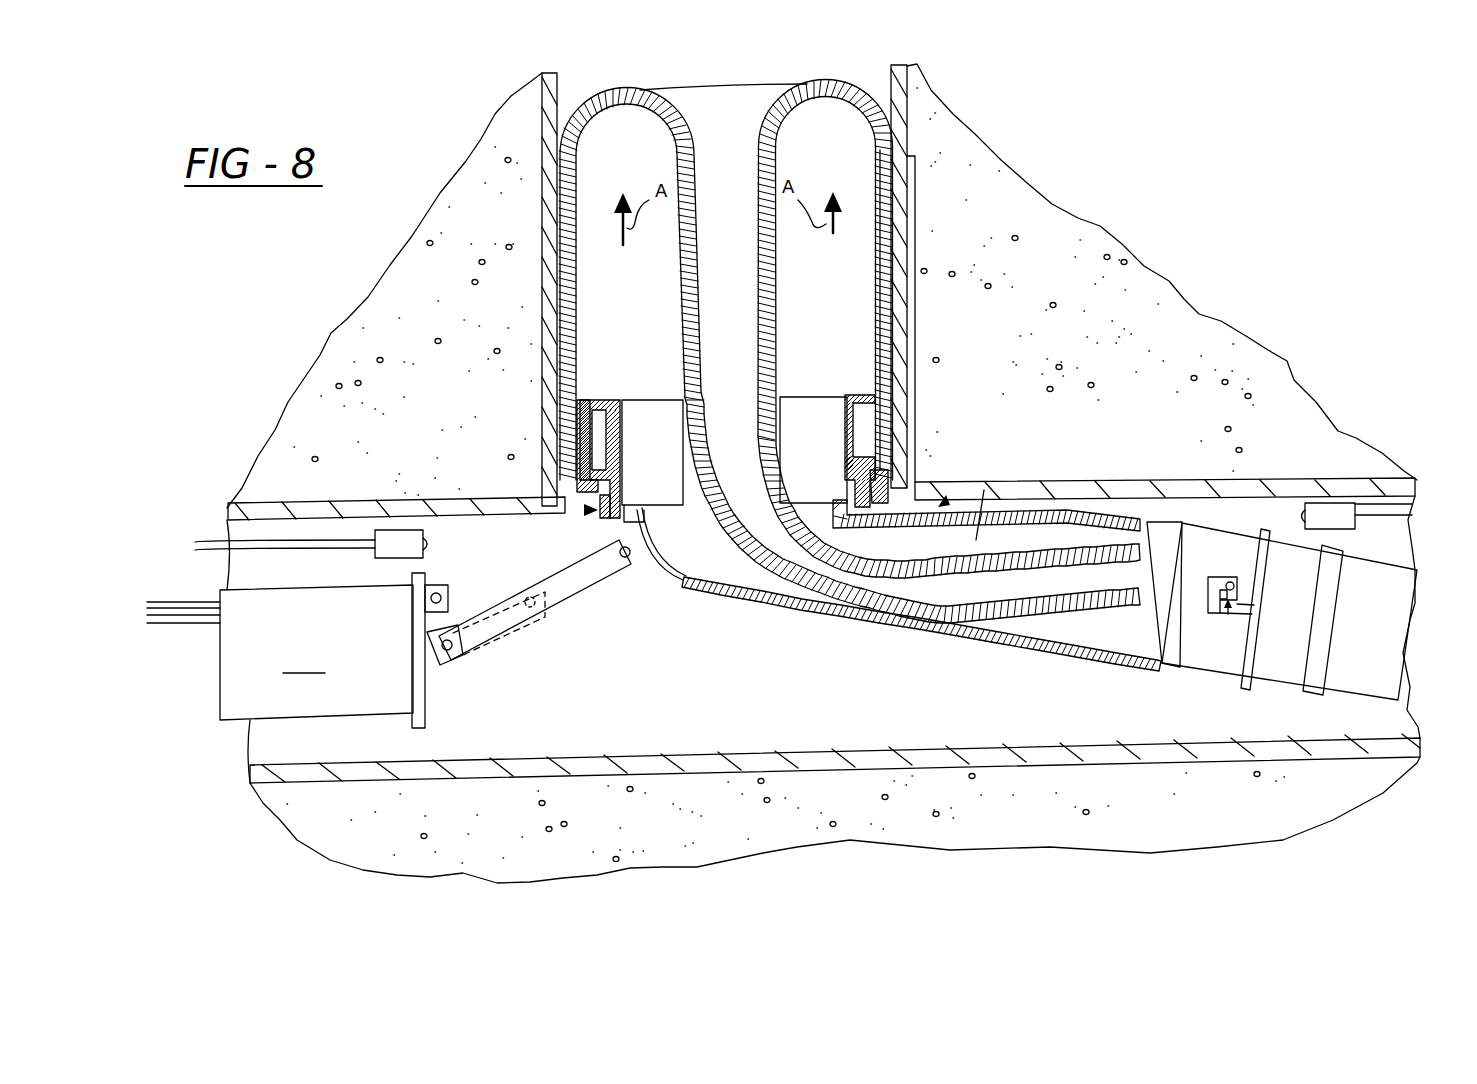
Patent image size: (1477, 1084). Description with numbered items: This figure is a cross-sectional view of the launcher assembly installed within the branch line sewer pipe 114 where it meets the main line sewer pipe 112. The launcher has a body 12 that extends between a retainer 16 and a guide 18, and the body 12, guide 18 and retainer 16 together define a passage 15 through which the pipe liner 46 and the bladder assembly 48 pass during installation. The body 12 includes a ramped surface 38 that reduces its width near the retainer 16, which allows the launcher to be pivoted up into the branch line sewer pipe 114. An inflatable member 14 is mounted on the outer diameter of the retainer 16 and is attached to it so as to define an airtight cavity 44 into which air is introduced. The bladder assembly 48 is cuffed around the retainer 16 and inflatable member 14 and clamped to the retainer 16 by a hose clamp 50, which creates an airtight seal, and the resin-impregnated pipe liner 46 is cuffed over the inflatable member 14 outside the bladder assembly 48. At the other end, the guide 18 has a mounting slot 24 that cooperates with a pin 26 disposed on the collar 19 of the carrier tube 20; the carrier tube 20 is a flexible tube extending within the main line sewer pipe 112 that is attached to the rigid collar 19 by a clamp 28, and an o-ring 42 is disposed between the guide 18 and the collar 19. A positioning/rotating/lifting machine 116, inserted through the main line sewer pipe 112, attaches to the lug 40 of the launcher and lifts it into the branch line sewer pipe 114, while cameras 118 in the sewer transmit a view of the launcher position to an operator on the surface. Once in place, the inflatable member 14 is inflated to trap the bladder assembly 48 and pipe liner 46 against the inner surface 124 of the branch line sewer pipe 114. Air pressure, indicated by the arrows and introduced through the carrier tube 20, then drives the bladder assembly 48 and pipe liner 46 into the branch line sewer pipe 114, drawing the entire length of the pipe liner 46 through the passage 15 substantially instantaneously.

The body 12 is at (1040, 505).
The inflatable member 14 is at (915, 372).
The passage 15 is at (984, 490).
The retainer 16 is at (845, 435).
The guide 18 is at (1165, 530).
The collar 19 is at (1293, 560).
The carrier tube 20 is at (1380, 578).
The mounting slot 24 is at (1210, 605).
The pin 26 is at (1226, 616).
The clamp 28 is at (1310, 700).
The ramped surface 38 is at (942, 500).
The lug 40 is at (637, 580).
The o-ring 42 is at (1247, 692).
The cavity 44 is at (600, 400).
The pipe liner 46 is at (931, 105).
The bladder assembly 48 is at (907, 156).
The hose clamp 50 is at (584, 508).
The main line sewer pipe 112 is at (1169, 482).
The branch line sewer pipe 114 is at (915, 449).
The positioning/rotating/lifting machine 116 is at (305, 650).
The camera 118 is at (406, 528).
The inner surface 124 is at (885, 305).